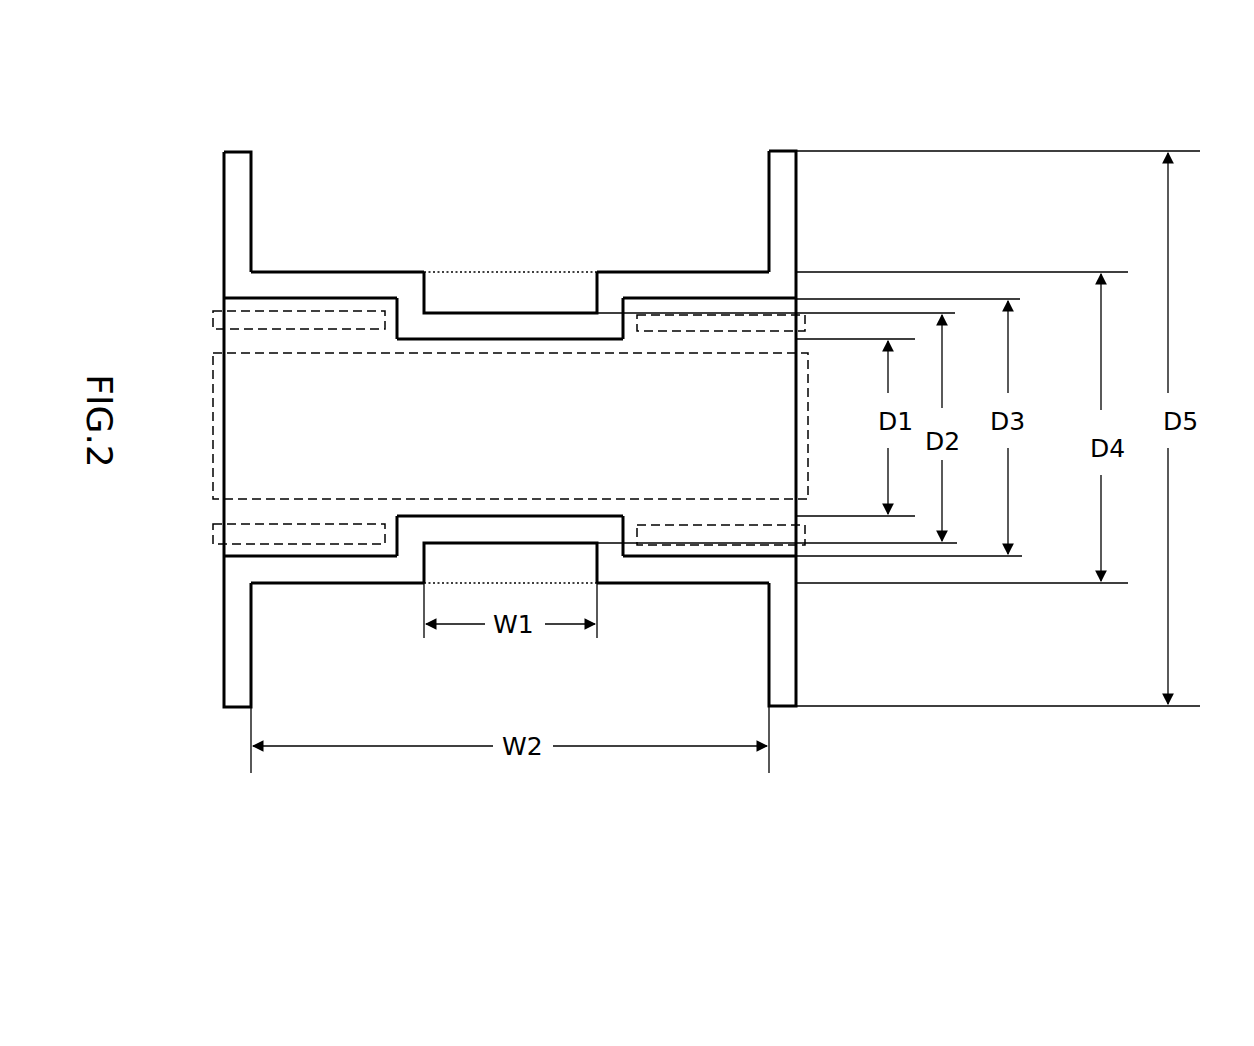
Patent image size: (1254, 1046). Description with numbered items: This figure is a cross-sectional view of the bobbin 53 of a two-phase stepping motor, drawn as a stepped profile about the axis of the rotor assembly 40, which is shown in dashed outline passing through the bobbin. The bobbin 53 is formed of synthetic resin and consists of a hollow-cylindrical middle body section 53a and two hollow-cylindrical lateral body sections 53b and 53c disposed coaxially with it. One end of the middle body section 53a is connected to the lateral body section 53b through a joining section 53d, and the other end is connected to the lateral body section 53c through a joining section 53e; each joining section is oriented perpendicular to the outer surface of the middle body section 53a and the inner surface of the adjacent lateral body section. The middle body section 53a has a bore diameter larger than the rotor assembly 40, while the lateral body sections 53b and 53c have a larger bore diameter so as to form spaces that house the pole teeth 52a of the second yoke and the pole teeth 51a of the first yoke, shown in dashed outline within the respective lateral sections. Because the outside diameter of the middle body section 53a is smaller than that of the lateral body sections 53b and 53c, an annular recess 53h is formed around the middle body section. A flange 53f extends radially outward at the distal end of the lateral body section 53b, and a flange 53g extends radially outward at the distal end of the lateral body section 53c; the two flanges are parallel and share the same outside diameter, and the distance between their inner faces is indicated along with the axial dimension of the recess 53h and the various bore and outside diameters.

The bobbin 53 is at (544, 371).
The flange 53f is at (252, 180).
The flange 53g is at (797, 192).
The lateral body section 53b is at (327, 272).
The lateral body section 53c is at (683, 272).
The middle body section 53a is at (510, 313).
The annular recess 53h is at (455, 272).
The joining section 53d is at (397, 323).
The joining section 53e is at (625, 333).
The pole teeth 52a is at (252, 312).
The pole teeth 51a is at (788, 310).
The rotor assembly 40 is at (213, 403).